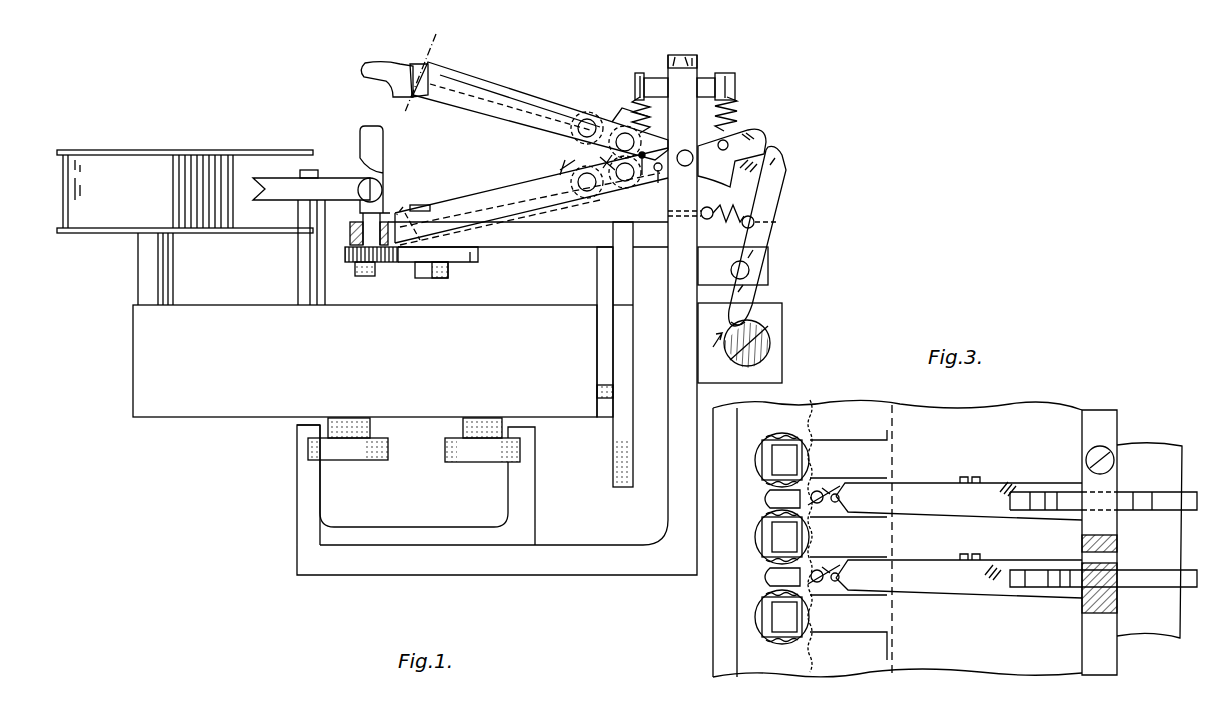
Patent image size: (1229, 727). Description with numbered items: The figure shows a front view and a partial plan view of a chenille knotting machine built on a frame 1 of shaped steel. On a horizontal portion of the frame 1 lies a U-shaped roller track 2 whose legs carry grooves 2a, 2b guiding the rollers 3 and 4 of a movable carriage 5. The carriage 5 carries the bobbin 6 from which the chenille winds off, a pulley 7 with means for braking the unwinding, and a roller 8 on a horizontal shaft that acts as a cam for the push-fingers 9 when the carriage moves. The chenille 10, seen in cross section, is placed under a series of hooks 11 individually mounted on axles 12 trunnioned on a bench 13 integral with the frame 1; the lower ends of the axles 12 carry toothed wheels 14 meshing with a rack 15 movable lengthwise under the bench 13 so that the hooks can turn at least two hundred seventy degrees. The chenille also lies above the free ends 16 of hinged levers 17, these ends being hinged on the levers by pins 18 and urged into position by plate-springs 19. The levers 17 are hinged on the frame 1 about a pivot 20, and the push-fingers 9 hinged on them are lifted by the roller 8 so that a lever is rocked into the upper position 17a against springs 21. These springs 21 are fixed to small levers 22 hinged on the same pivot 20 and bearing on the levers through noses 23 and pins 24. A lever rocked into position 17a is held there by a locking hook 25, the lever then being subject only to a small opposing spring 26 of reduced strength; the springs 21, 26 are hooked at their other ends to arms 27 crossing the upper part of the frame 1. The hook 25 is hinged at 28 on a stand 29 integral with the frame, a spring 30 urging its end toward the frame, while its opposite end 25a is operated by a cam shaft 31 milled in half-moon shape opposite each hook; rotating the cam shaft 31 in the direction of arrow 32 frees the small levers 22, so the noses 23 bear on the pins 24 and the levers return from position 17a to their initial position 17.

In FIG. 1, the frame 1 is at (677, 432).
In FIG. 1, the roller track 2 is at (405, 536).
In FIG. 1, the groove 2a is at (313, 459).
In FIG. 1, the groove 2b is at (520, 452).
In FIG. 1, the roller 3 is at (387, 461).
In FIG. 1, the roller 4 is at (471, 463).
In FIG. 1, the movable carriage 5 is at (445, 418).
In FIG. 1, the bobbin 6 is at (116, 228).
In FIG. 1, the pulley 7 is at (294, 193).
In FIG. 1, the roller 8 is at (623, 392).
In FIG. 1, the push-finger 9 is at (606, 251).
In FIG. 1, the chenille 10 is at (380, 189).
In FIG. 1, the hook 11 is at (363, 137).
In FIG. 3, the hook 11 is at (776, 462).
In FIG. 1, the axle 12 is at (353, 263).
In FIG. 1, the bench 13 is at (551, 236).
In FIG. 1, the toothed wheel 14 is at (369, 277).
In FIG. 3, the toothed wheel 14 is at (782, 440).
In FIG. 1, the rack 15 is at (474, 263).
In FIG. 3, the rack 15 is at (830, 418).
In FIG. 1, the free end 16 is at (383, 63).
In FIG. 3, the free end 16 is at (814, 490).
In FIG. 1, the hinged lever 17 is at (510, 198).
In FIG. 3, the hinged lever 17 is at (990, 592).
In FIG. 1, the upper position of lever 17a is at (530, 112).
In FIG. 1, the pin 18 is at (430, 58).
In FIG. 1, the plate-spring 19 is at (472, 80).
In FIG. 3, the plate-spring 19 is at (868, 484).
In FIG. 1, the pivot 20 is at (686, 166).
In FIG. 1, the spring 21 is at (736, 113).
In FIG. 1, the small lever 22 is at (746, 133).
In FIG. 3, the small lever 22 is at (1138, 578).
In FIG. 1, the nose 23 is at (617, 190).
In FIG. 1, the pin 24 is at (661, 172).
In FIG. 1, the locking hook 25 is at (768, 208).
In FIG. 1, the end of hook 25a is at (748, 318).
In FIG. 1, the opposing spring 26 is at (640, 100).
In FIG. 1, the arm 27 is at (702, 82).
In FIG. 3, the arm 27 is at (1150, 500).
In FIG. 1, the pivot 28 is at (750, 270).
In FIG. 1, the stand 29 is at (761, 260).
In FIG. 1, the spring 30 is at (722, 225).
In FIG. 1, the cam shaft 31 is at (771, 346).
In FIG. 1, the arrow 32 is at (756, 338).